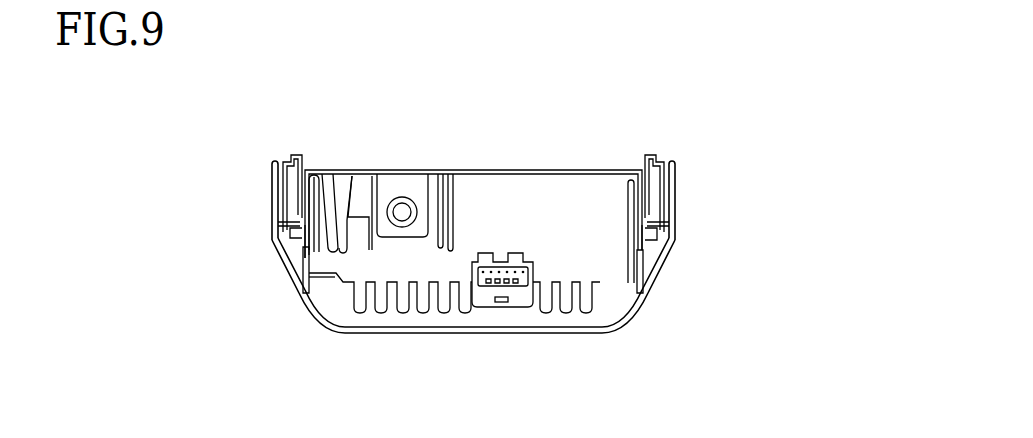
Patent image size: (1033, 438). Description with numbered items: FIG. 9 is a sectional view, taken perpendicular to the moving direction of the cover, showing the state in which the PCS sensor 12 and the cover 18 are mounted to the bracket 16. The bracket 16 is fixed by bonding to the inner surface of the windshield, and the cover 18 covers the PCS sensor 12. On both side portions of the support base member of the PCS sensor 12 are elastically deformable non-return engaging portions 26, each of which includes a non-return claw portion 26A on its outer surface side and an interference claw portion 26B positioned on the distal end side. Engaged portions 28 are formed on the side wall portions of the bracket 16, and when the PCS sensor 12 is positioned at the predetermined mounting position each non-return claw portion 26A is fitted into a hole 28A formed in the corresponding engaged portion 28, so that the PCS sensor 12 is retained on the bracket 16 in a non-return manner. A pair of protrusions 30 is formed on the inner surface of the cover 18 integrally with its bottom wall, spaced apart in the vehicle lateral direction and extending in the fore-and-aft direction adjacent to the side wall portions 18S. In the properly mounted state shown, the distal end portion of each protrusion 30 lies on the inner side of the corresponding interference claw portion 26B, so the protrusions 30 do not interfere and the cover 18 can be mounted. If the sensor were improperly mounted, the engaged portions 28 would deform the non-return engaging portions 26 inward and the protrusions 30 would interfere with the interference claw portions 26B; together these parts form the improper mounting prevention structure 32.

The PCS sensor 12 is at (496, 149).
The bracket 16 is at (295, 150).
The cover 18 is at (531, 338).
The side wall portions 18S is at (272, 197).
The non-return engaging portions 26 is at (284, 234).
The non-return claw portion 26A is at (283, 228).
The interference claw portion 26B is at (301, 250).
The engaged portions 28 is at (298, 186).
The hole 28A is at (290, 222).
The protrusions 30 is at (312, 270).
The improper mounting prevention structure 32 is at (297, 284).